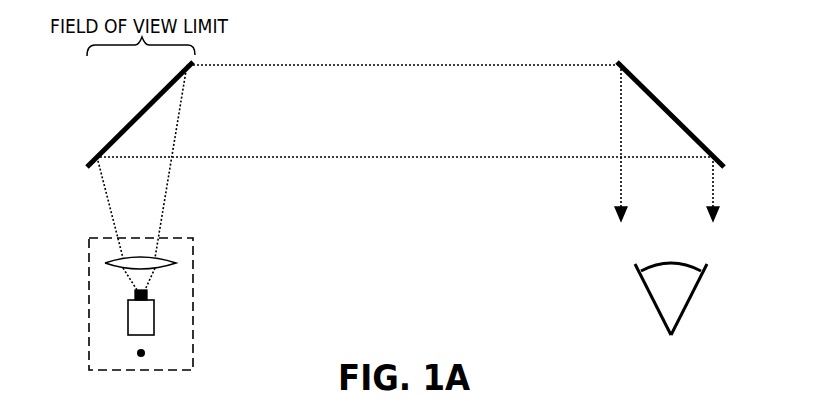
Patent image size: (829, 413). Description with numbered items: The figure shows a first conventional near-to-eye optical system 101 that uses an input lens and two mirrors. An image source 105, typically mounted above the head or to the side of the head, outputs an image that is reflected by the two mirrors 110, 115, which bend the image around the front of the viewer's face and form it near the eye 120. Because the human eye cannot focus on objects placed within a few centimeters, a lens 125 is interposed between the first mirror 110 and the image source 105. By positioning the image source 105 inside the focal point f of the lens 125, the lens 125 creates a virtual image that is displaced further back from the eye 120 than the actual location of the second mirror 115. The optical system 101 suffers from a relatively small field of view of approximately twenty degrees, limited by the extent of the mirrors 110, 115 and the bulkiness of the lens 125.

The near-to-eye optical system 101 is at (413, 216).
The image source 105 is at (127, 318).
The first mirror 110 is at (104, 146).
The second mirror 115 is at (680, 120).
The eye 120 is at (686, 305).
The lens 125 is at (105, 262).